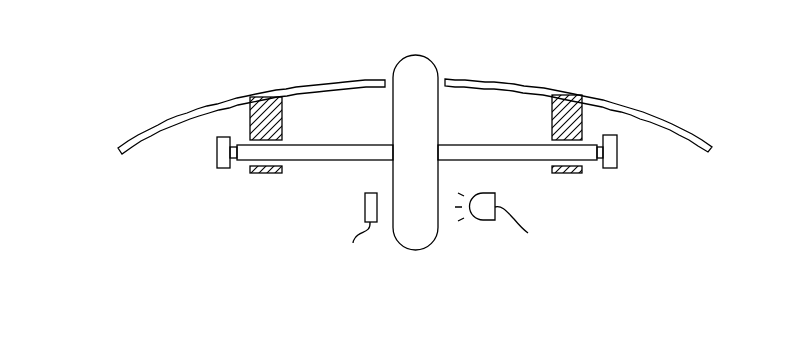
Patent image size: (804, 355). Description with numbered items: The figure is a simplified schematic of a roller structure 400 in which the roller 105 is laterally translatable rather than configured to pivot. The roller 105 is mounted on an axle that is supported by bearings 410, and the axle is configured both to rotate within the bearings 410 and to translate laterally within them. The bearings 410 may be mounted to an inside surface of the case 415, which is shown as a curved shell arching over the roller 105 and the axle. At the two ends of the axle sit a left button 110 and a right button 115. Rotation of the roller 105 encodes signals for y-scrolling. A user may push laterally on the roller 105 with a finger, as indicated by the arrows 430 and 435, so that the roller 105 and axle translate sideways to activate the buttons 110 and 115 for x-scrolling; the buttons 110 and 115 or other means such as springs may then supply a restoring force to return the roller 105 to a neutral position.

The roller structure 400 is at (99, 104).
The roller 105 is at (412, 250).
The left button 110 is at (220, 168).
The right button 115 is at (610, 168).
The bearings 410 is at (283, 126).
The case 415 is at (643, 102).
The arrow 430 is at (453, 62).
The arrow 435 is at (378, 62).